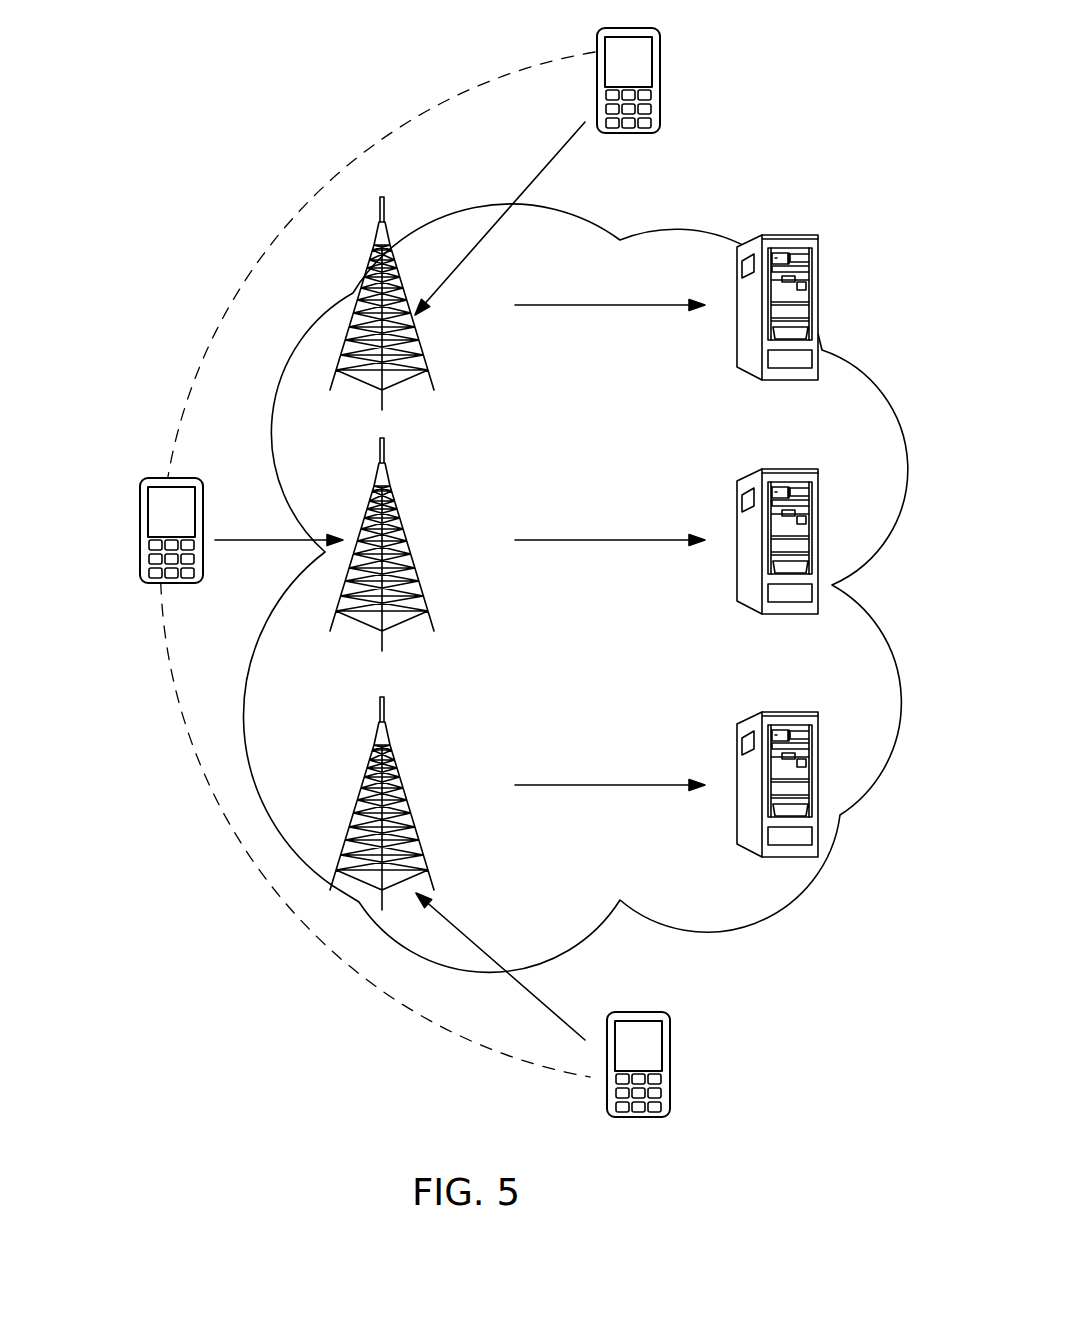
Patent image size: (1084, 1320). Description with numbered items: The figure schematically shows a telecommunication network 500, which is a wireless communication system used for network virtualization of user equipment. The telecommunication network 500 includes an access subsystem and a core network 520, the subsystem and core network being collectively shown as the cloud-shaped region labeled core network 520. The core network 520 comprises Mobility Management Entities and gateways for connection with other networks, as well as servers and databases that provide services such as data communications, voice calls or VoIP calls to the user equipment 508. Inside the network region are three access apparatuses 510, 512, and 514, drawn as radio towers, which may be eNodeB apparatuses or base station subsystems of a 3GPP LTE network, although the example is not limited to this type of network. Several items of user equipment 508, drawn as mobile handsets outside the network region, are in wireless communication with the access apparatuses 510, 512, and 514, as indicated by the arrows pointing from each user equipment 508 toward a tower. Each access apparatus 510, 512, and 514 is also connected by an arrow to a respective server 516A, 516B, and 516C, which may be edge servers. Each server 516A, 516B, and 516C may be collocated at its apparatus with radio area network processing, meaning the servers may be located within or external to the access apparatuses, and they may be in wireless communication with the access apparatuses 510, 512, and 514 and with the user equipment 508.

The telecommunication network 500 is at (181, 104).
The user equipment 508 is at (660, 80).
The access apparatus 510 is at (412, 332).
The access apparatus 512 is at (400, 790).
The access apparatus 514 is at (405, 541).
The server 516A is at (734, 305).
The server 516B is at (734, 540).
The server 516C is at (734, 786).
The core network 520 is at (872, 392).